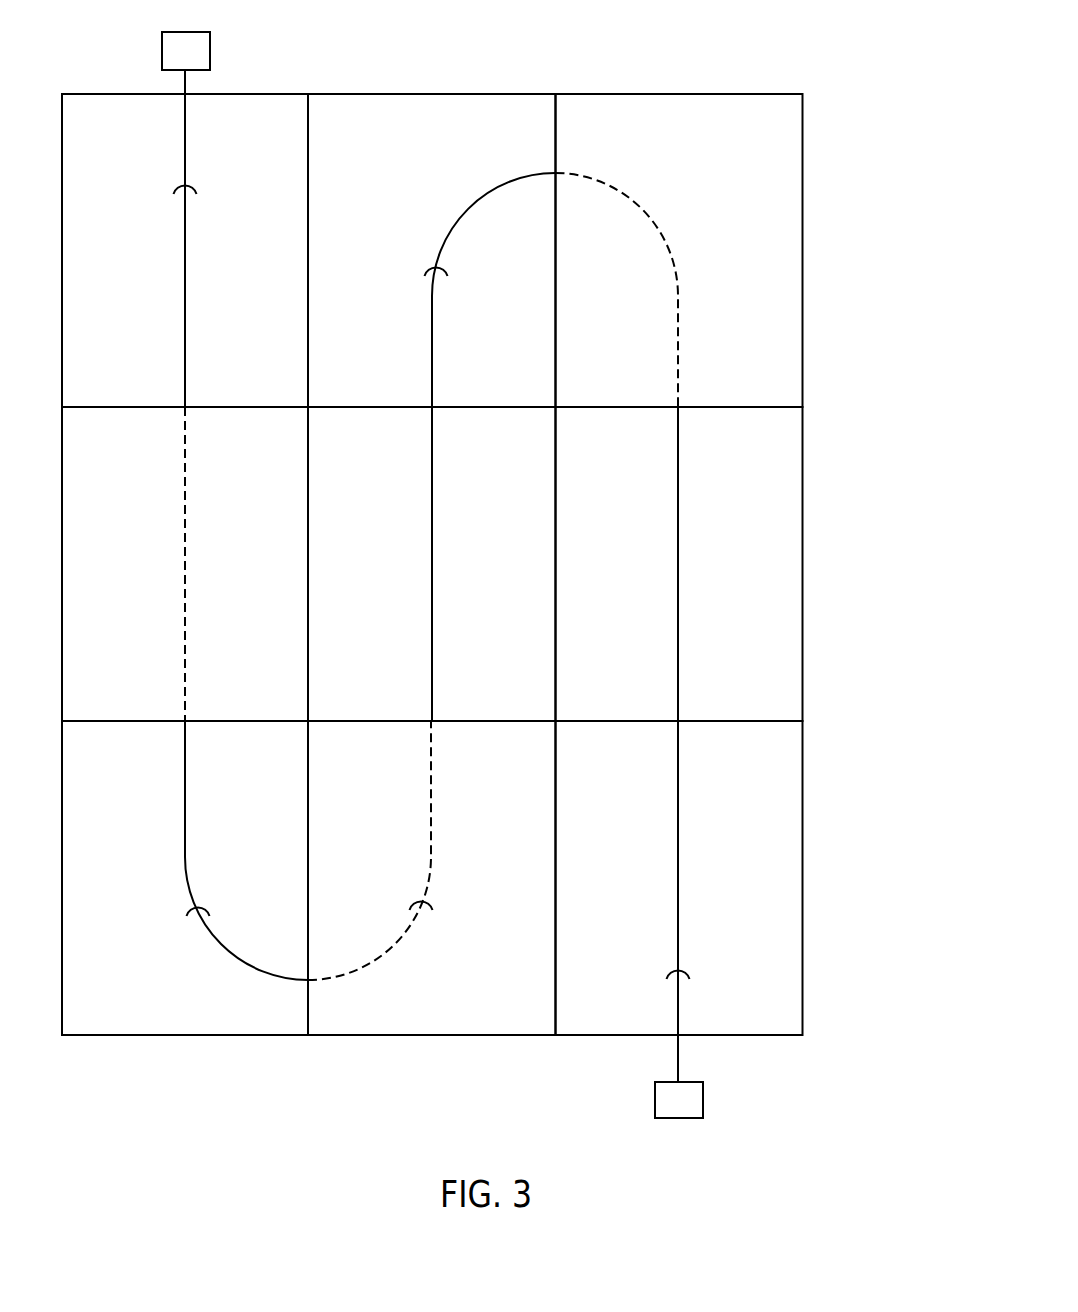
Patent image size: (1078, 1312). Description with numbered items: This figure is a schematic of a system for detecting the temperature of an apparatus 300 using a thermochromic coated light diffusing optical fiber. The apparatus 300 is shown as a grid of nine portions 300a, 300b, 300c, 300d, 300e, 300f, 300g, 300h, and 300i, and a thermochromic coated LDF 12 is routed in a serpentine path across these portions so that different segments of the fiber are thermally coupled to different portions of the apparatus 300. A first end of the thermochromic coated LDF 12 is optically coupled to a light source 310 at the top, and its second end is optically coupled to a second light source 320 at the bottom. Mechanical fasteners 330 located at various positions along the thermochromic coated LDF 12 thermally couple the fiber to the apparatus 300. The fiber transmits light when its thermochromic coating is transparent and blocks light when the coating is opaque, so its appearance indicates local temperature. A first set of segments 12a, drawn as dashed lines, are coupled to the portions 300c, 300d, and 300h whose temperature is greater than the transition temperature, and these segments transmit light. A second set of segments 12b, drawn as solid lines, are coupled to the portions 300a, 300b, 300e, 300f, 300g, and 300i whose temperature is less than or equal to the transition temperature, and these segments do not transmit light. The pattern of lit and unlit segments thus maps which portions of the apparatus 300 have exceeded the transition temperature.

The thermochromic coated LDF 12 is at (425, 576).
The first set of segments 12a is at (640, 205).
The second set of segments 12b is at (185, 262).
The apparatus 300 is at (432, 524).
The portion of the apparatus 300a is at (300, 398).
The portion of the apparatus 300b is at (547, 398).
The portion of the apparatus 300c is at (793, 398).
The portion of the apparatus 300d is at (300, 714).
The portion of the apparatus 300e is at (547, 714).
The portion of the apparatus 300f is at (793, 714).
The portion of the apparatus 300g is at (300, 1026).
The portion of the apparatus 300h is at (547, 1026).
The portion of the apparatus 300i is at (793, 1026).
The light source 310 is at (198, 63).
The second light source 320 is at (691, 1112).
The mechanical fasteners 330 is at (195, 184).